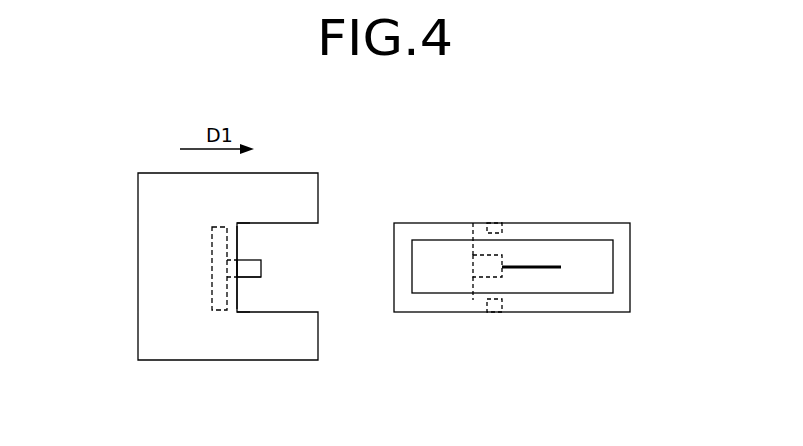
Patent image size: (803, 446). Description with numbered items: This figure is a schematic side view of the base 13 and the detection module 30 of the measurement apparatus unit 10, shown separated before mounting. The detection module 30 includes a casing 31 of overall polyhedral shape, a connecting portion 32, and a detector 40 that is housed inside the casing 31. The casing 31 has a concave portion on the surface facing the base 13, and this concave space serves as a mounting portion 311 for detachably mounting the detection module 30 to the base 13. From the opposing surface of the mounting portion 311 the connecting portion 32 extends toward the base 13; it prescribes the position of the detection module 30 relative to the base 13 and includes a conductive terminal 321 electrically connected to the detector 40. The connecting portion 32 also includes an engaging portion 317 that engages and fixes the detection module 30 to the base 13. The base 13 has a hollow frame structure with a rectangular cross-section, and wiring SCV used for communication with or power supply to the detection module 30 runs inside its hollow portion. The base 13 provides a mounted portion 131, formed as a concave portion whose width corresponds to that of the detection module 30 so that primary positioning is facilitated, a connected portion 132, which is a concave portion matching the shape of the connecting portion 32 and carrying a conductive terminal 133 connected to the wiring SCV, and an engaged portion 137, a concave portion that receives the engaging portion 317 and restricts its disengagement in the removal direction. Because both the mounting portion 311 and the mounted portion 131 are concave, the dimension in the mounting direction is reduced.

The measurement apparatus unit 10 is at (370, 143).
The base 13 is at (632, 272).
The detection module 30 is at (117, 381).
The casing 31 is at (152, 238).
The mounting portion 311 is at (252, 233).
The engaging portion 317 is at (259, 225).
The connecting portion 32 is at (262, 270).
The terminal 321 is at (252, 280).
The detector 40 is at (212, 290).
The mounted portion 131 is at (473, 300).
The connected portion 132 is at (474, 266).
The terminal 133 is at (472, 277).
The engaged portion 137 is at (497, 222).
The wiring SCV is at (545, 267).